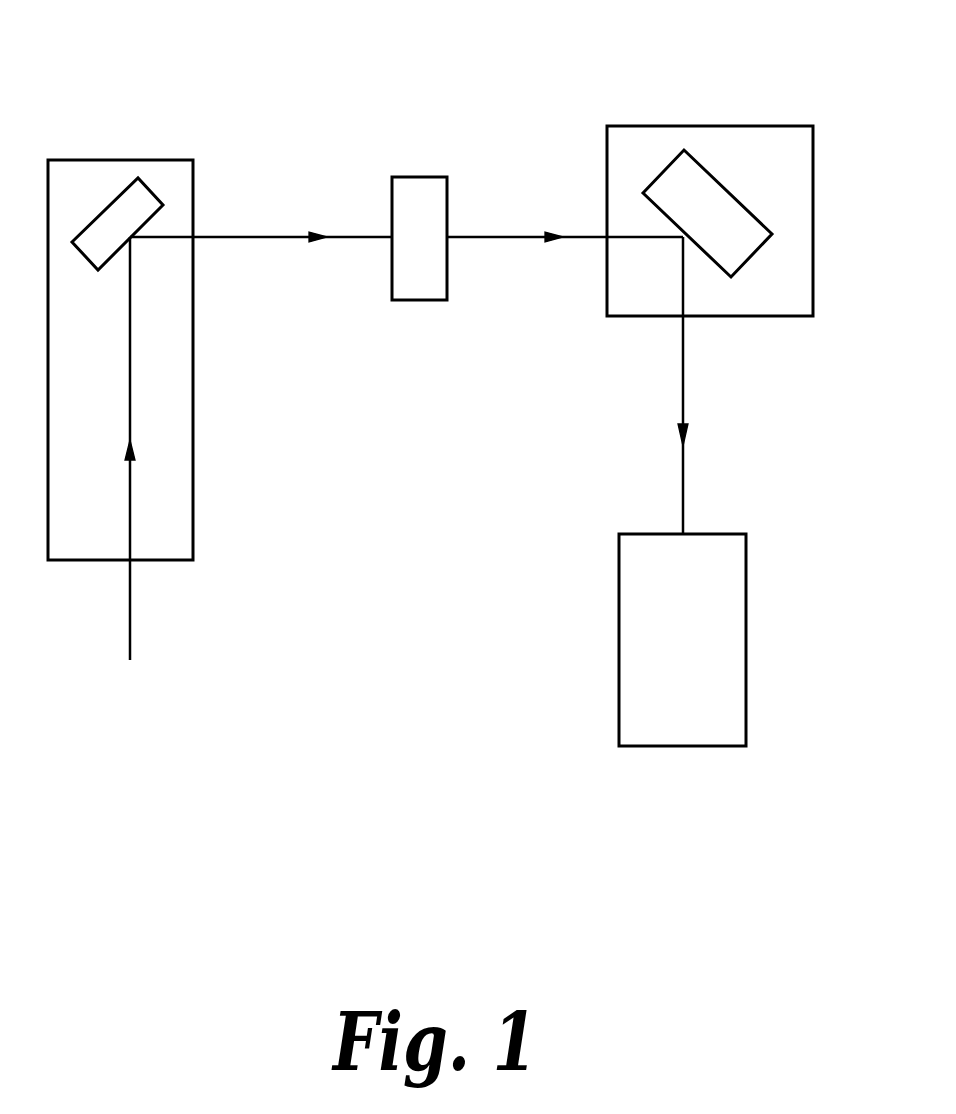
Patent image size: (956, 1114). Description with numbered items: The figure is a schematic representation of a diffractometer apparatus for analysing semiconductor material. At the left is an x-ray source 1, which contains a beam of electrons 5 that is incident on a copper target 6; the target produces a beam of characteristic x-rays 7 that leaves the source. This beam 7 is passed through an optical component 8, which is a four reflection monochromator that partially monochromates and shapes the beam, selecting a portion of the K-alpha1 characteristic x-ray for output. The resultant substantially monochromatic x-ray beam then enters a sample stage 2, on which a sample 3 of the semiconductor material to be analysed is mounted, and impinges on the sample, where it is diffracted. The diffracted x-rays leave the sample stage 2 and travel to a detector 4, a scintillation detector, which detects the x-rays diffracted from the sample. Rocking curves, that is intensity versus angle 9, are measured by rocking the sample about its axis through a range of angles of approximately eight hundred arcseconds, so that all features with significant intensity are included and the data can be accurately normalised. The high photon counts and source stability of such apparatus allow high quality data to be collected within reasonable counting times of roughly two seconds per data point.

The x-ray source 1 is at (77, 532).
The sample stage 2 is at (687, 133).
The sample 3 is at (733, 217).
The detector 4 is at (721, 626).
The beam of electrons 5 is at (130, 485).
The copper target 6 is at (128, 203).
The beam of characteristic x-rays 7 is at (247, 237).
The optical component 8 is at (413, 283).
The angle 9 is at (650, 220).